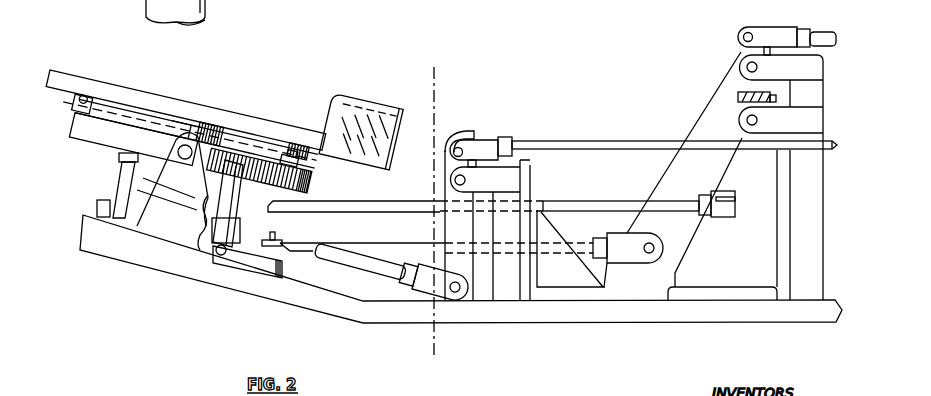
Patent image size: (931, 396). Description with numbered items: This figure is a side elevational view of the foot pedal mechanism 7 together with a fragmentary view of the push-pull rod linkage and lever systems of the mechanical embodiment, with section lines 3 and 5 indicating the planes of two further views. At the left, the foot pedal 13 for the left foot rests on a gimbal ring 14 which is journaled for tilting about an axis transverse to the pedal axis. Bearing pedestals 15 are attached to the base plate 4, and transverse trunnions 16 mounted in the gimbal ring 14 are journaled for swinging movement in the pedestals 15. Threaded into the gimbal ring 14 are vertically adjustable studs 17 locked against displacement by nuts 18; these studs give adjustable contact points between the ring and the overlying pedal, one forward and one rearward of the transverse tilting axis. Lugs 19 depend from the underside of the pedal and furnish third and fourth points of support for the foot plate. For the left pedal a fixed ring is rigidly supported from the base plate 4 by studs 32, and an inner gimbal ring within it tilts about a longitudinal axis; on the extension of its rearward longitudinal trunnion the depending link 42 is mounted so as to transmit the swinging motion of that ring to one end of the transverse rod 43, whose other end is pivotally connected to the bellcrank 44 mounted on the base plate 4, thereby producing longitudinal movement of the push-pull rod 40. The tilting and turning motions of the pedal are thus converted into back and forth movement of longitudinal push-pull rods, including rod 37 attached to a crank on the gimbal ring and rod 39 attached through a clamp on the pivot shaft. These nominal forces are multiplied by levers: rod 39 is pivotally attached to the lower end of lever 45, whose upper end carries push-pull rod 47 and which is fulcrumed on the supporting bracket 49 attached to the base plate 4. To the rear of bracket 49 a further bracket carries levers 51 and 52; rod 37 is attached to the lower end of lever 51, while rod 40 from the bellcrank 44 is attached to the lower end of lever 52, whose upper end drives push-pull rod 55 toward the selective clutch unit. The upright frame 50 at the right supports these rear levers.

The section line 3- 3 is at (76, 84).
The base plate 4 is at (227, 278).
The section line 5- 5 is at (452, 93).
The foot pedal mechanism 7 is at (104, 182).
The foot pedal 13 is at (218, 112).
The gimbal ring 14 is at (110, 137).
The bearing pedestal 15 is at (97, 211).
The transverse trunnion 16 is at (185, 156).
The adjustable stud 17 is at (90, 94).
The locking nut 18 is at (97, 107).
The lug 19 is at (177, 113).
The stud 32 is at (121, 164).
The push-pull rod 37 is at (338, 199).
The push-pull rod 39 is at (350, 262).
The push-pull rod 40 is at (360, 243).
The depending link 42 is at (237, 198).
The transverse rod 43 is at (232, 243).
The bellcrank 44 is at (289, 268).
The lever 45 is at (452, 226).
The push-pull rod 47 is at (580, 143).
The supporting bracket 49 is at (508, 217).
The frame 50 is at (813, 203).
The lever 51 is at (746, 174).
The lever 52 is at (684, 173).
The push-pull rod 55 is at (819, 31).